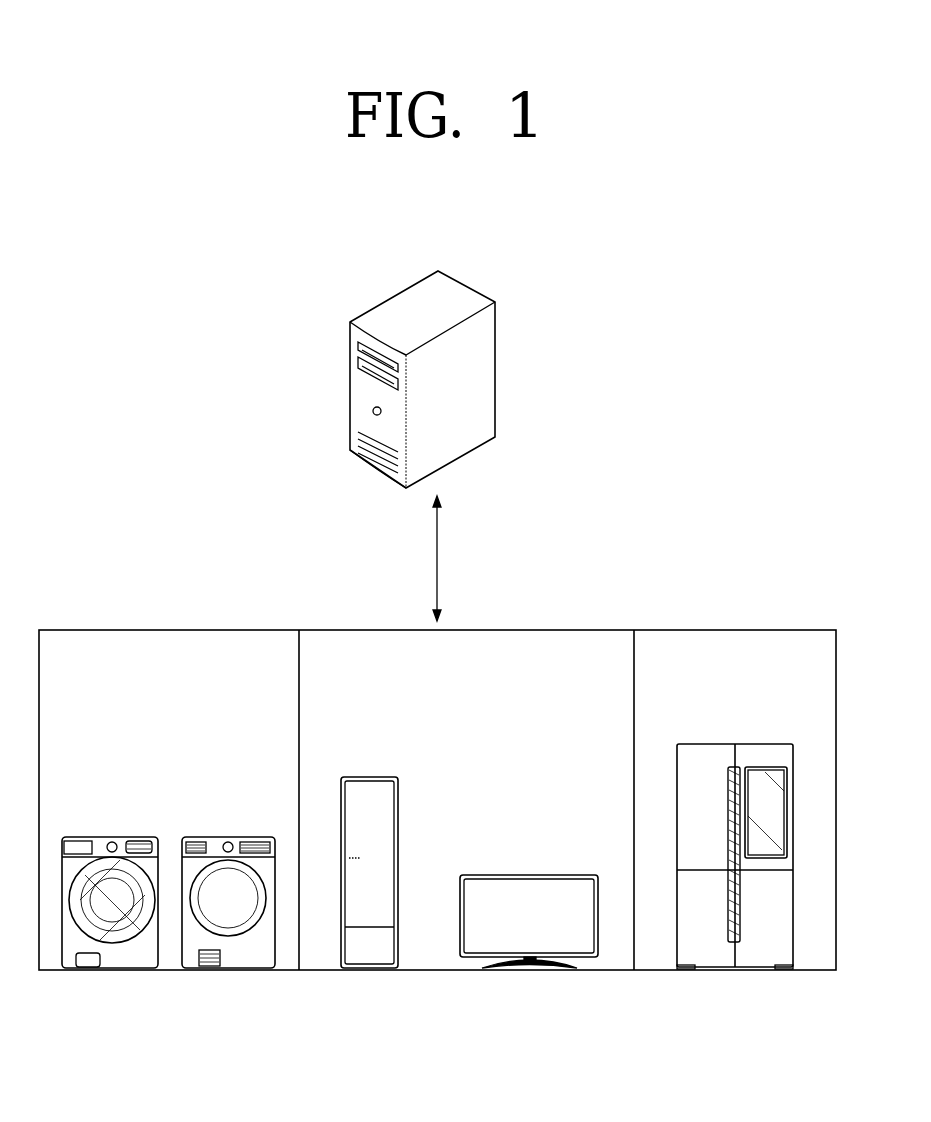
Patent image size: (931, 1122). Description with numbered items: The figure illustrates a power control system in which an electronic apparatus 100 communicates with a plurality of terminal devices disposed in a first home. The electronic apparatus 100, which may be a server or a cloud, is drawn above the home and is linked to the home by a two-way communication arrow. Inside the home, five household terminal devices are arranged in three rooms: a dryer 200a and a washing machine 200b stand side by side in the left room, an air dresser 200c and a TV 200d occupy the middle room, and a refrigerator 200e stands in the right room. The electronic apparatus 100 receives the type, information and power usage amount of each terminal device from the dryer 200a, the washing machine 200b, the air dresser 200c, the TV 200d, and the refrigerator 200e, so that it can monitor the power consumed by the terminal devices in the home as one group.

The electronic apparatus 100 is at (495, 352).
The dryer 200a is at (112, 970).
The washing machine 200b is at (223, 970).
The air dresser 200c is at (368, 970).
The TV 200d is at (505, 970).
The refrigerator 200e is at (715, 970).